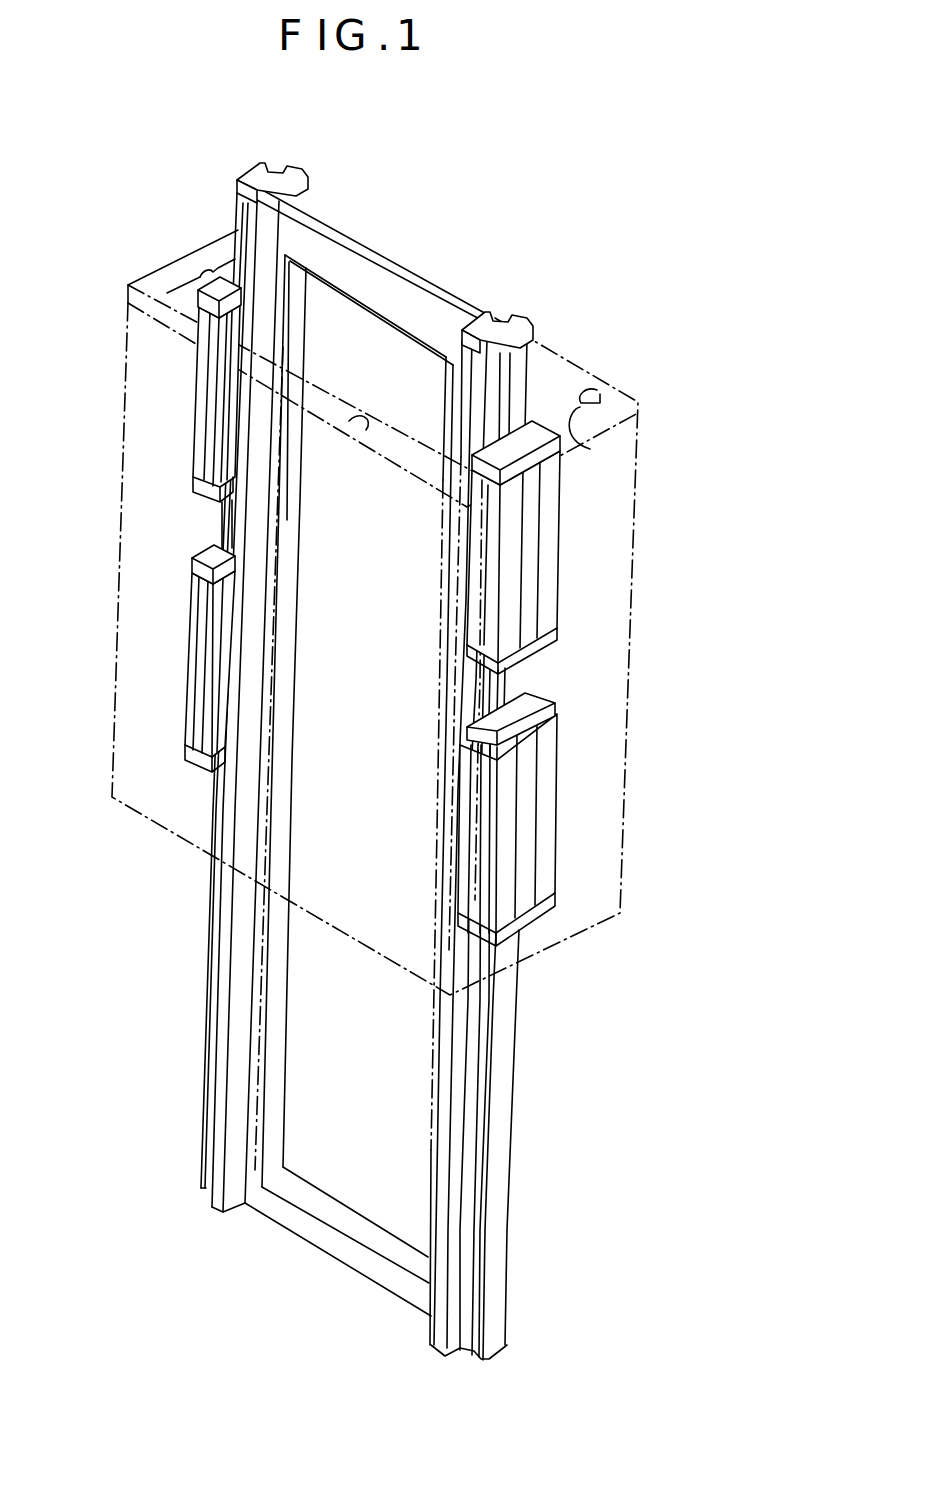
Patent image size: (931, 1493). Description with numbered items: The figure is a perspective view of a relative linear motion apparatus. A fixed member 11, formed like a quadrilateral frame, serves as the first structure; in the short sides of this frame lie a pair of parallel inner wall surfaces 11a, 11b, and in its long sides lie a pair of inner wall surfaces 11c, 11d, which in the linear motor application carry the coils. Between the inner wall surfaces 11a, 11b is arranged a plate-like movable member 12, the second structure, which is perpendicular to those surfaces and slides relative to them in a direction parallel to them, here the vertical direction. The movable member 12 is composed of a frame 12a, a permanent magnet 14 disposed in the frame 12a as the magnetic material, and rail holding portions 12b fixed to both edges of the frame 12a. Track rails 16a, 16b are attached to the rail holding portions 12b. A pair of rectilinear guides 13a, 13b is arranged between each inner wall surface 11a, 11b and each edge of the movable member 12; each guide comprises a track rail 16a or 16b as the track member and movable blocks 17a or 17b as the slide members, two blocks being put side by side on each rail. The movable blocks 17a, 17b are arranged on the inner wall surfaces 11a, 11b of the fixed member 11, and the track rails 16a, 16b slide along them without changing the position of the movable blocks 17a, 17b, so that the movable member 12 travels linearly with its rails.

The fixed member 11 is at (552, 388).
The inner wall surface 11a is at (590, 449).
The inner wall surface 11b is at (212, 278).
The inner wall surface 11c is at (596, 390).
The inner wall surface 11d is at (355, 412).
The movable member 12 is at (370, 756).
The frame 12a is at (328, 243).
The rail holding portion 12b is at (292, 176).
The rectilinear guide 13a is at (508, 455).
The rectilinear guide 13b is at (220, 292).
The permanent magnet 14 is at (395, 345).
The track rail 16a is at (507, 1047).
The track rail 16b is at (213, 1030).
The movable block 17a is at (550, 542).
The movable block 17b is at (196, 380).